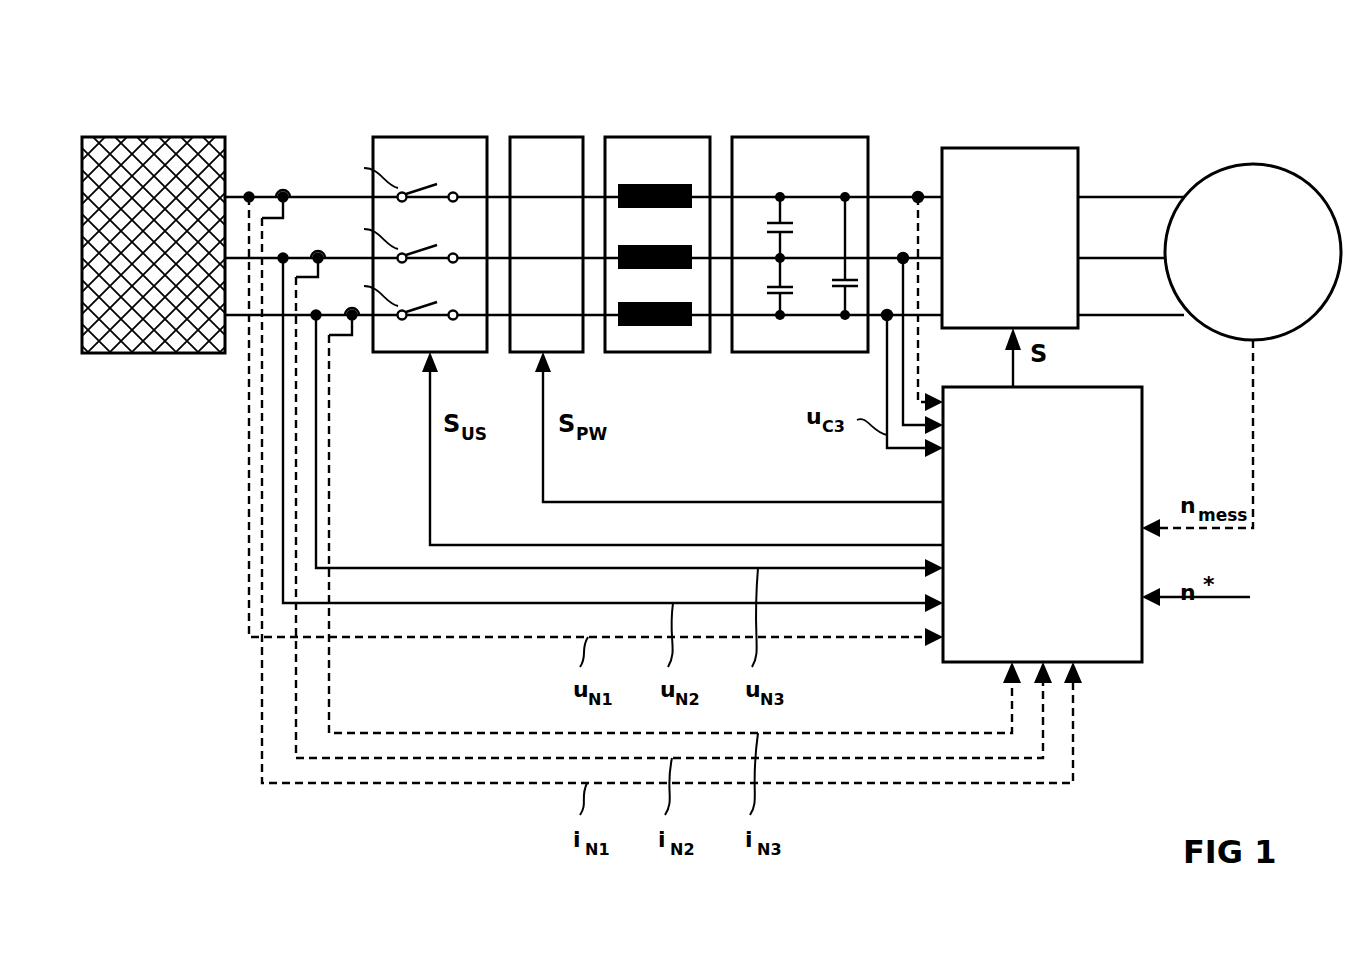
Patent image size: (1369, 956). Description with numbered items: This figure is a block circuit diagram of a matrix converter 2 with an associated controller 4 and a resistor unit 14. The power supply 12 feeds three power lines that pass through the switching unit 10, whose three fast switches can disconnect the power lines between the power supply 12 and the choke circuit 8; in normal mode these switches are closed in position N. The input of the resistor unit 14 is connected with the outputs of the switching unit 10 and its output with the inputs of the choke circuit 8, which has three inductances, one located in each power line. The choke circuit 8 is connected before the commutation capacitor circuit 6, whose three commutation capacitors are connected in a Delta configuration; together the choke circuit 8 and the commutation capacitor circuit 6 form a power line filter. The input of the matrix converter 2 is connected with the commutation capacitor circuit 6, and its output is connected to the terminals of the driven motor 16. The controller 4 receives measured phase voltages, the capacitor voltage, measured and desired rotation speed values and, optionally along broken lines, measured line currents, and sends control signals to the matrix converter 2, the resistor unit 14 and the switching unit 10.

The power supply 12 is at (140, 137).
The switching unit 10 is at (420, 137).
The resistor unit 14 is at (543, 137).
The choke circuit 8 is at (648, 137).
The commutation capacitor circuit 6 is at (793, 137).
The matrix converter 2 is at (1005, 148).
The driven motor 16 is at (1236, 165).
The controller 4 is at (1142, 447).